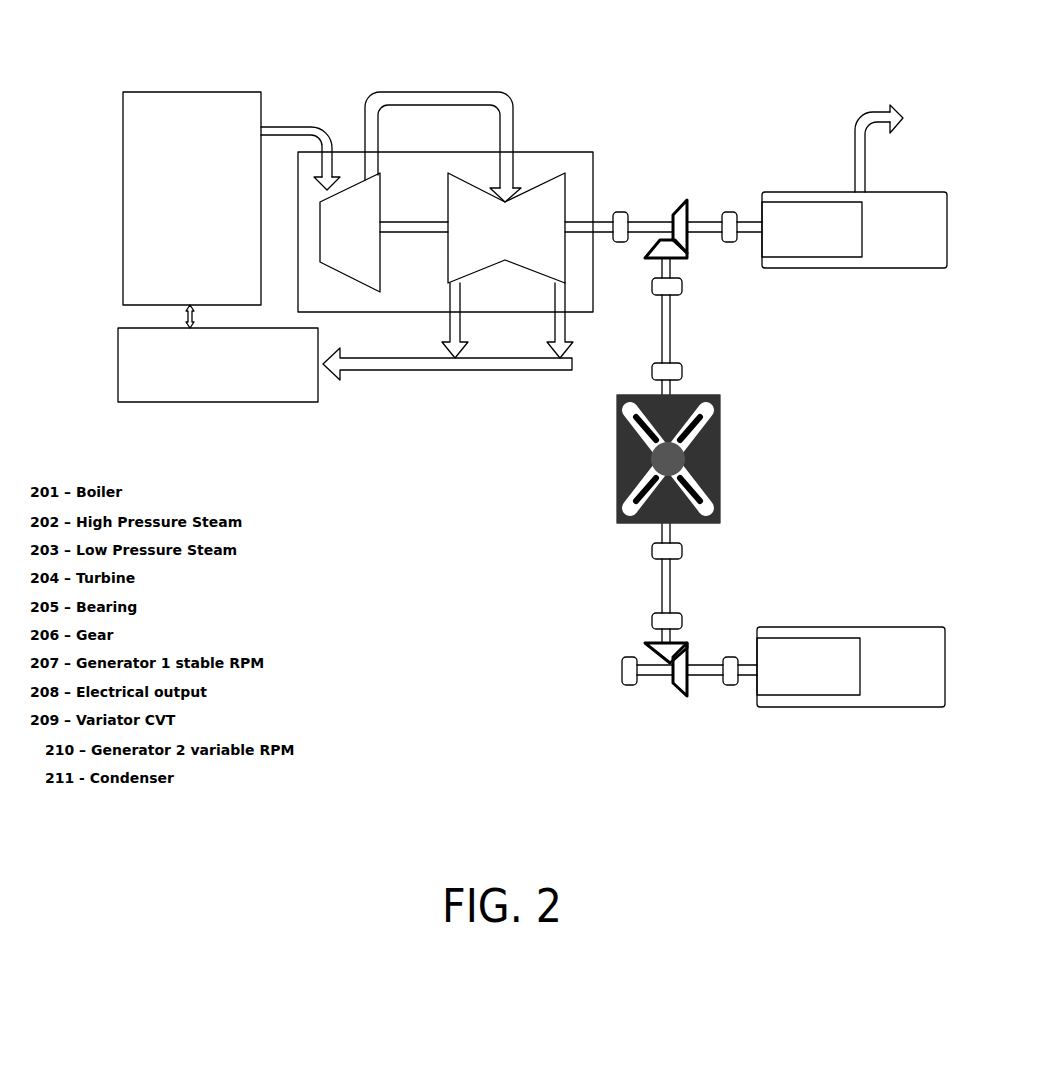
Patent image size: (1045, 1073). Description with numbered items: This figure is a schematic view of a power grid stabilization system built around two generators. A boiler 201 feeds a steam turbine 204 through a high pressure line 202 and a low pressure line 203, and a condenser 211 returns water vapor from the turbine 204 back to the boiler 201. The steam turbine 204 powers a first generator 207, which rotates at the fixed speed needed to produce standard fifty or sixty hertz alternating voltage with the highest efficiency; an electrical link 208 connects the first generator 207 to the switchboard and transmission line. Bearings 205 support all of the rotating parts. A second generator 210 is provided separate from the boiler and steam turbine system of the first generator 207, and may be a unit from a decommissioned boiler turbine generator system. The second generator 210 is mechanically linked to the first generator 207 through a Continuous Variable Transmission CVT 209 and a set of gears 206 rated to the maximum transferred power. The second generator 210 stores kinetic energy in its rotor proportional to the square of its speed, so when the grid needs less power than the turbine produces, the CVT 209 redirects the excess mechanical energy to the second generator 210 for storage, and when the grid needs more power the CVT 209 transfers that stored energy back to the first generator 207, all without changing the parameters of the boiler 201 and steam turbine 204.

The boiler 201 is at (192, 198).
The high pressure line 202 is at (291, 125).
The low pressure line 203 is at (478, 92).
The steam turbine 204 is at (455, 255).
The bearings 205 is at (620, 212).
The set of gears 206 is at (688, 200).
The first generator 207 is at (854, 230).
The electrical link 208 is at (897, 106).
The Continuous Variable Transmission (CVT) 209 is at (720, 465).
The second generator 210 is at (851, 667).
The condenser 211 is at (345, 353).